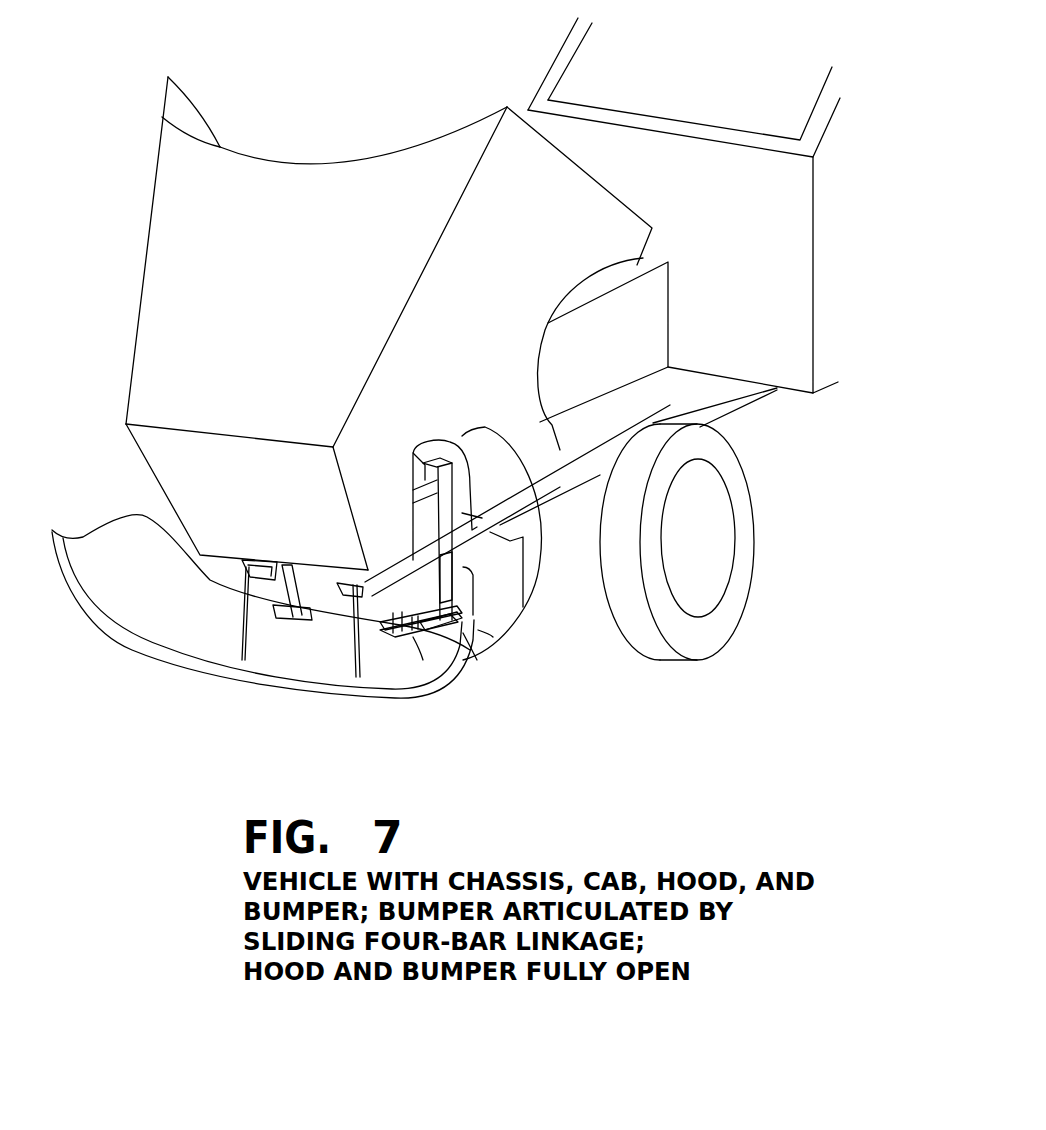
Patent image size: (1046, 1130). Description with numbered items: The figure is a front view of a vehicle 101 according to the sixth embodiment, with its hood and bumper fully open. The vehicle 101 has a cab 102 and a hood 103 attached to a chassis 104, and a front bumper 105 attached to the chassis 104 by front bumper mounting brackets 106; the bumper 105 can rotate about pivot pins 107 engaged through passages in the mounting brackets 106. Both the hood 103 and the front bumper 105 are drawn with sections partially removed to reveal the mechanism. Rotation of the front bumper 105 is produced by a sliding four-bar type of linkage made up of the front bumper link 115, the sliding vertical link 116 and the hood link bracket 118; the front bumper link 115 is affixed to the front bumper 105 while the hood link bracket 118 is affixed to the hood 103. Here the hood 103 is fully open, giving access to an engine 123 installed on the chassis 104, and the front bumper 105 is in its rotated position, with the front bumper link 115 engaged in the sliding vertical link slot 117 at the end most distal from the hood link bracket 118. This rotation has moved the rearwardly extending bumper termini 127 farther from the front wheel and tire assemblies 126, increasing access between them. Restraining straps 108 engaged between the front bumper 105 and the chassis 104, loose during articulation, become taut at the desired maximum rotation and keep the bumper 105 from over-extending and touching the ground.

The vehicle 101 is at (546, 68).
The cab 102 is at (539, 85).
The hood 103 is at (158, 127).
The chassis 104 is at (734, 416).
The front bumper 105 is at (131, 646).
The front bumper mounting brackets 106 is at (267, 614).
The pivot pins 107 is at (292, 620).
The restraining straps 108 is at (242, 654).
The front bumper link 115 is at (452, 623).
The sliding vertical link 116 is at (461, 614).
The sliding vertical link slot 117 is at (459, 561).
The hood link bracket 118 is at (463, 513).
The engine 123 is at (628, 354).
The front wheel and tire assemblies 126 is at (706, 638).
The rearwardly extending bumper termini 127 is at (537, 594).